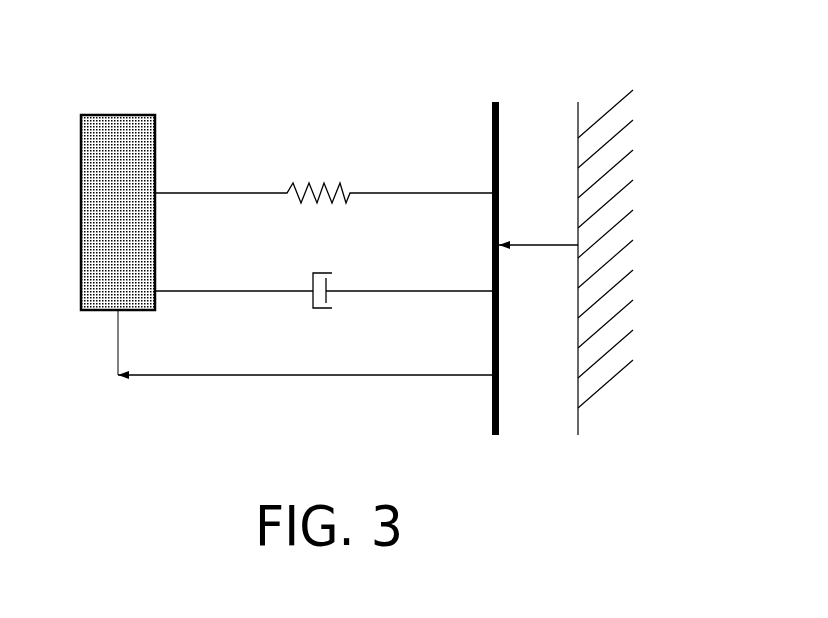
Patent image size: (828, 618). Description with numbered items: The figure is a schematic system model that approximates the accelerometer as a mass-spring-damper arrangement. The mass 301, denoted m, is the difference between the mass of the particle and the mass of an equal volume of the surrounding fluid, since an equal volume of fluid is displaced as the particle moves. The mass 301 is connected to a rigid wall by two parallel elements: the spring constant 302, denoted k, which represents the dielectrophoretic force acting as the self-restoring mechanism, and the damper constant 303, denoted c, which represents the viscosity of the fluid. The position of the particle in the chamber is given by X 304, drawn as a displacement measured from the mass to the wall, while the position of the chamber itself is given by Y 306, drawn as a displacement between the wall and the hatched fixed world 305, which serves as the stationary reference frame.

The mass 301 is at (115, 115).
The spring constant 302 is at (337, 180).
The damper constant 303 is at (323, 272).
The position of the particle 304 is at (240, 375).
The fixed world 305 is at (602, 397).
The position of the chamber 306 is at (560, 243).